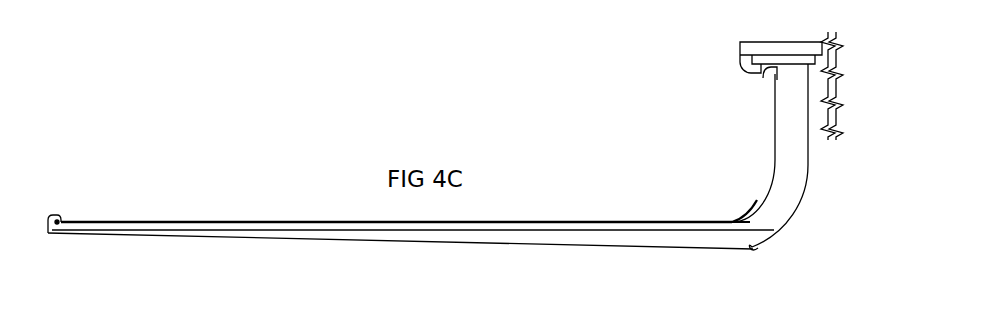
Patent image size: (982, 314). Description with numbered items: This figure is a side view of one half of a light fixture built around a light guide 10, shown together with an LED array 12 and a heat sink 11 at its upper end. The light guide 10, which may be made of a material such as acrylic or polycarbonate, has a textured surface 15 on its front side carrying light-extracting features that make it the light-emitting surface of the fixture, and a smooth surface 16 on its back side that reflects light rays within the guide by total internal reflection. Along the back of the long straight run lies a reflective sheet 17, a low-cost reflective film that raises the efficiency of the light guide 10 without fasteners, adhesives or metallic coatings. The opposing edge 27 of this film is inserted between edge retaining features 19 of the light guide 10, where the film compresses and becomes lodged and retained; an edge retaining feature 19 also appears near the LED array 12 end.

The light guide 10 is at (792, 120).
The heat sink 11 is at (748, 50).
The LED array 12 is at (765, 59).
The textured surface 15 is at (490, 245).
The smooth surface 16 is at (732, 222).
The reflective sheet 17 is at (528, 222).
The edge retaining feature 19 is at (765, 73).
The opposing edge 27 is at (60, 222).